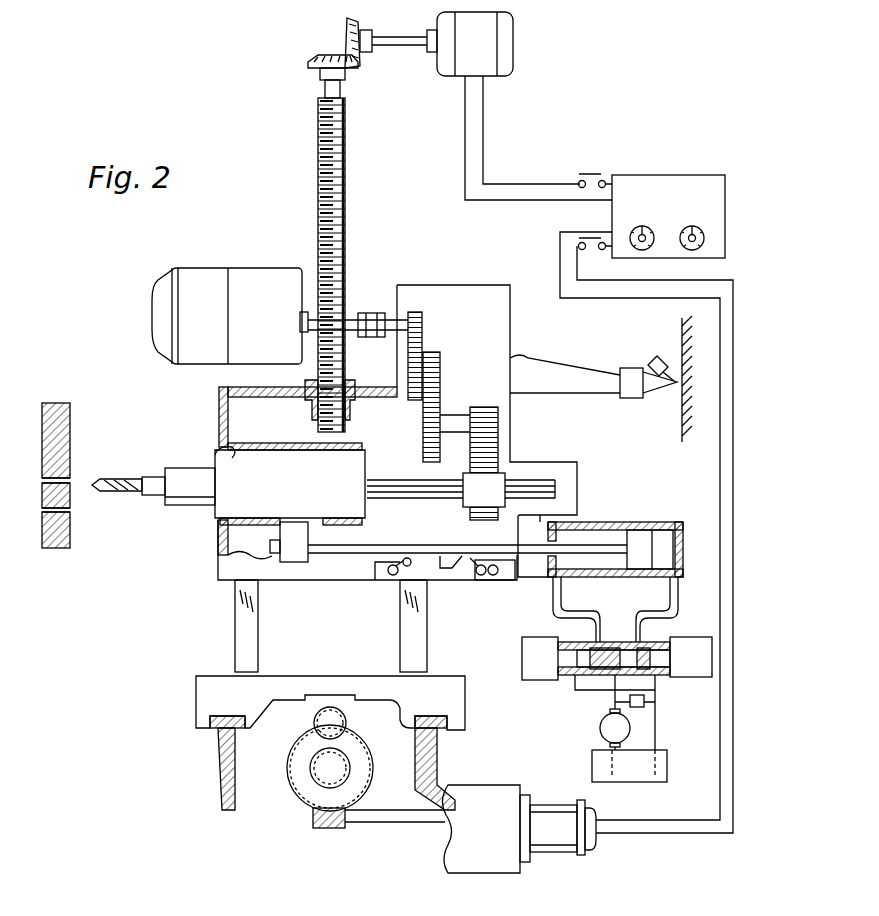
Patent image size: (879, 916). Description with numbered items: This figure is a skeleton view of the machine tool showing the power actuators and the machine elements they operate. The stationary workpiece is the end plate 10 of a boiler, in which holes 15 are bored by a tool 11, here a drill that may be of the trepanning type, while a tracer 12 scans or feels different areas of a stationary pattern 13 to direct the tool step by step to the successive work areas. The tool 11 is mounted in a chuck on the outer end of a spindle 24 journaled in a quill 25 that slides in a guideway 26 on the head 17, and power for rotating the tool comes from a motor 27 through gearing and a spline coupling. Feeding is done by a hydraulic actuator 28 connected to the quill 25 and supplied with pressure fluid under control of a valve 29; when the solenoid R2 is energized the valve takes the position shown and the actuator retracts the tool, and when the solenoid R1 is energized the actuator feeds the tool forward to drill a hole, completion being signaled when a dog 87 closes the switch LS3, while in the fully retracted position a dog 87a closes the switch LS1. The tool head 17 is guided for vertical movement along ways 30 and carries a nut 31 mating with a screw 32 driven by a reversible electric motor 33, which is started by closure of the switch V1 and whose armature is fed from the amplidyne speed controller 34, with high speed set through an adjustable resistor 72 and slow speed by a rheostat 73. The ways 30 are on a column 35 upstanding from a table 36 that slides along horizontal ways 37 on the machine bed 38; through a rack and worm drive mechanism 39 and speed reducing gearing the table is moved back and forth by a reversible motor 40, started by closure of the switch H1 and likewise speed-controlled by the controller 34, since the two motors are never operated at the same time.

The end plate 10 is at (70, 440).
The tool 11 is at (120, 480).
The tracer 12 is at (648, 364).
The pattern 13 is at (682, 354).
The holes 15 is at (45, 492).
The head 17 is at (218, 412).
The spindle 24 is at (180, 500).
The quill 25 is at (218, 510).
The guideway 26 is at (228, 456).
The motor 27 is at (232, 284).
The hydraulic actuator 28 is at (612, 522).
The valve 29 is at (596, 688).
The ways 30 is at (237, 610).
The nut 31 is at (352, 383).
The screw 32 is at (345, 252).
The reversible electric motor 33 is at (513, 37).
The speed controller 34 is at (706, 166).
The column 35 is at (268, 630).
The table 36 is at (213, 686).
The horizontal ways 37 is at (218, 728).
The machine bed 38 is at (222, 780).
The rack and worm drive mechanism 39 is at (357, 720).
The reversible motor 40 is at (565, 852).
The adjustable resistor 72 is at (655, 222).
The rheostat 73 is at (694, 226).
The dog 87 is at (439, 568).
The dog 87a is at (478, 575).
The switch LS1 is at (503, 582).
The switch LS3 is at (385, 581).
The solenoid R1 is at (700, 677).
The solenoid R2 is at (522, 648).
The switch V1 is at (594, 176).
The switch H1 is at (582, 236).